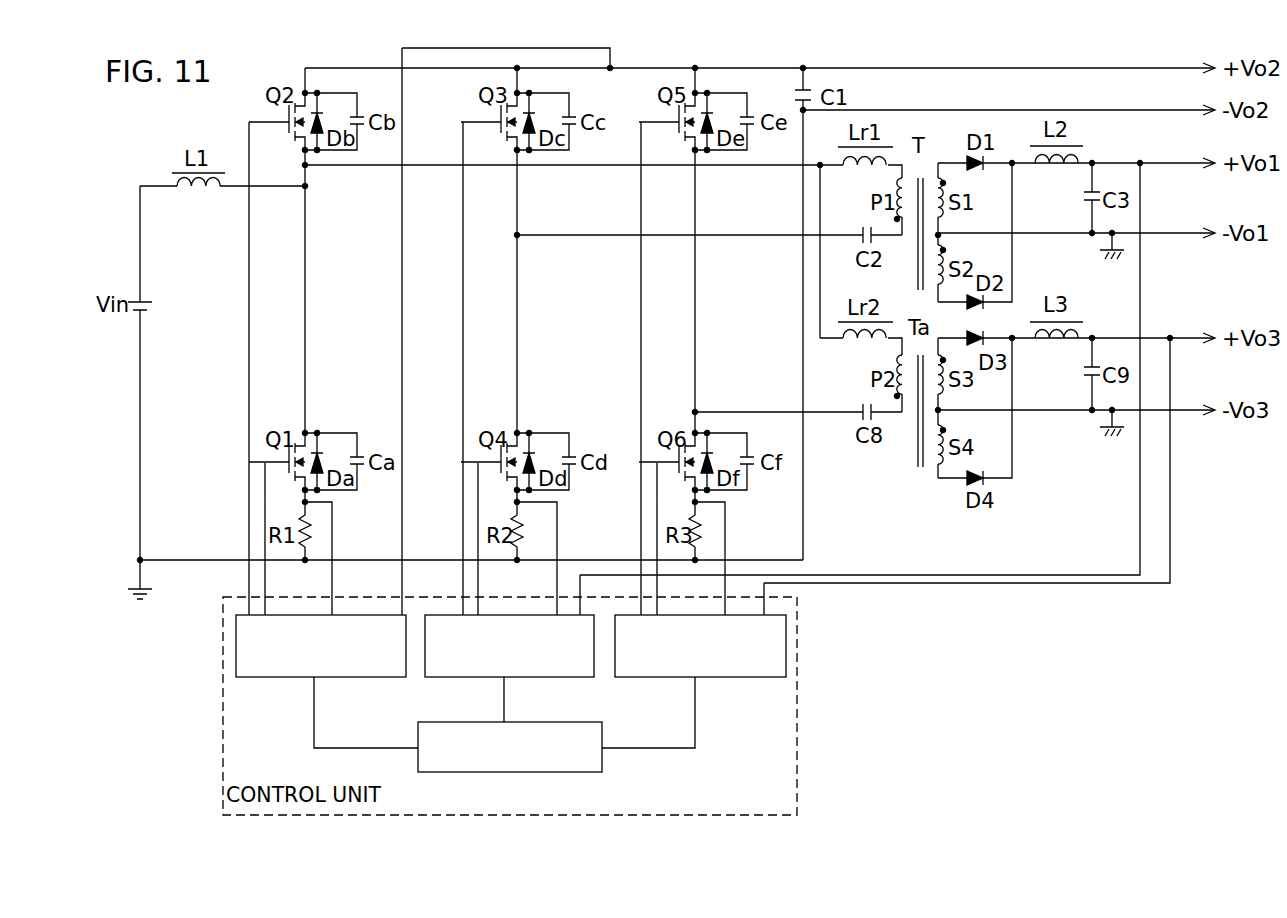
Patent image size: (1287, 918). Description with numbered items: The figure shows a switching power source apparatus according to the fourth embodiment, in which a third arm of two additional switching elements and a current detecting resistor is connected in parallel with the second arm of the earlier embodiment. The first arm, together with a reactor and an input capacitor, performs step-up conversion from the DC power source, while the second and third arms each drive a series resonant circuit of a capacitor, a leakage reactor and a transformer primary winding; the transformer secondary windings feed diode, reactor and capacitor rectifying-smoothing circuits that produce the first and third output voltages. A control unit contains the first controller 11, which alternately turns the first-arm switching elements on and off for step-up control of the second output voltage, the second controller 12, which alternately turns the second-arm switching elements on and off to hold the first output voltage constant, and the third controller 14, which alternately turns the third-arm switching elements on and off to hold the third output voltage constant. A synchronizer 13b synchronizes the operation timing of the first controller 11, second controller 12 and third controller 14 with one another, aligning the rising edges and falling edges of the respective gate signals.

The first controller 11 is at (272, 678).
The second controller 12 is at (555, 678).
The synchronizer 13b is at (602, 762).
The third controller 14 is at (741, 678).